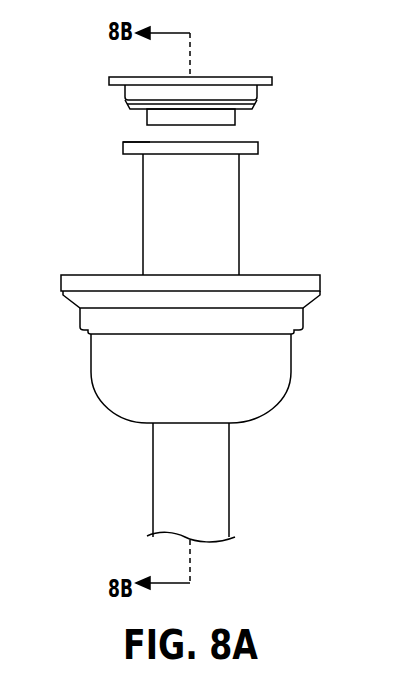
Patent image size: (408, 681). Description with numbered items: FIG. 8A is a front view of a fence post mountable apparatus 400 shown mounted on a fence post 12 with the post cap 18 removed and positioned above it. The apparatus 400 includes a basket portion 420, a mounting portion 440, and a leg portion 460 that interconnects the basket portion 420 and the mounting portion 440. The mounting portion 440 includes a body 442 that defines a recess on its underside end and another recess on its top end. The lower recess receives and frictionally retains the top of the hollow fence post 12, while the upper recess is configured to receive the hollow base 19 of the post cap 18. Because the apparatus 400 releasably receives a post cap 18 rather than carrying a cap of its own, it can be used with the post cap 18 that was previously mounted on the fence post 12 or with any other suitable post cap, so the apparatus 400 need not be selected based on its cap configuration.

The fence post 12 is at (230, 473).
The post cap 18 is at (130, 92).
The base 19 is at (235, 116).
The fence post mountable apparatus 400 is at (288, 205).
The basket portion 420 is at (100, 369).
The mounting portion 440 is at (258, 148).
The body 442 is at (123, 144).
The leg portion 460 is at (152, 207).